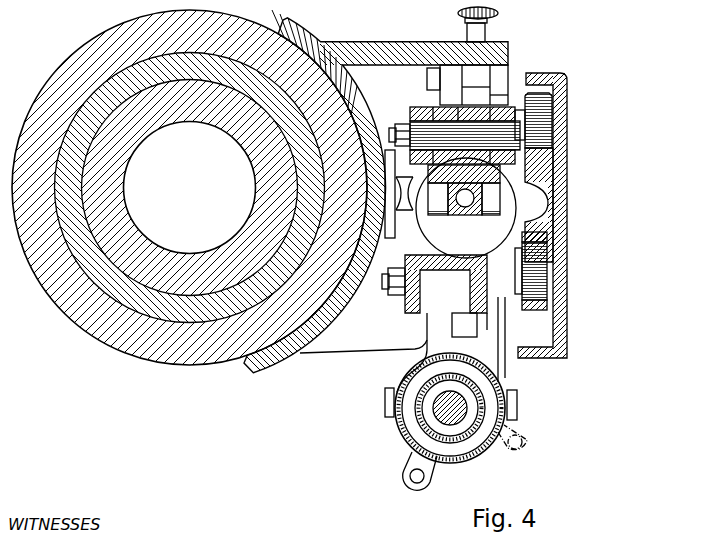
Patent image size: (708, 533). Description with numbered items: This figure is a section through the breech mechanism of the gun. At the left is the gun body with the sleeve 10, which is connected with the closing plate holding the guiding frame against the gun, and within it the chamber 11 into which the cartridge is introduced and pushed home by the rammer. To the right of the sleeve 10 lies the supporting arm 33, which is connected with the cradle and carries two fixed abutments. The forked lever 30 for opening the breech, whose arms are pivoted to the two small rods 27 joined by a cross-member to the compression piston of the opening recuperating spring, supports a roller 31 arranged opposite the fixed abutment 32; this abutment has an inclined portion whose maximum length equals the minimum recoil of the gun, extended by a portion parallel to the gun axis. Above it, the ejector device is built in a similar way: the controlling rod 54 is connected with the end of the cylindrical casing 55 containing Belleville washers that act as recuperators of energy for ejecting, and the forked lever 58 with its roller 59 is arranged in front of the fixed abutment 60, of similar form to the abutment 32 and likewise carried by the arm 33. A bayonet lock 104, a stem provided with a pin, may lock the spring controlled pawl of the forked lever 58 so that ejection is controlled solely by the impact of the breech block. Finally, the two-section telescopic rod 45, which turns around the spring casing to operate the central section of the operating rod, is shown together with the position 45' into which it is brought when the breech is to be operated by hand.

The sleeve 10 is at (272, 364).
The chamber 11 is at (189, 187).
The small rods 27 is at (385, 394).
The forked lever 30 is at (503, 378).
The roller 31 is at (537, 267).
The fixed abutment 32 is at (528, 233).
The supporting arm 33 is at (560, 166).
The rod 45 is at (447, 472).
The position of the rod 45' is at (529, 450).
The controlling rod 54 is at (446, 212).
The cylindrical casing 55 is at (510, 198).
The forked lever 58 is at (422, 114).
The roller 59 is at (543, 134).
The fixed abutment 60 is at (532, 170).
The bayonet lock 104 is at (480, 33).